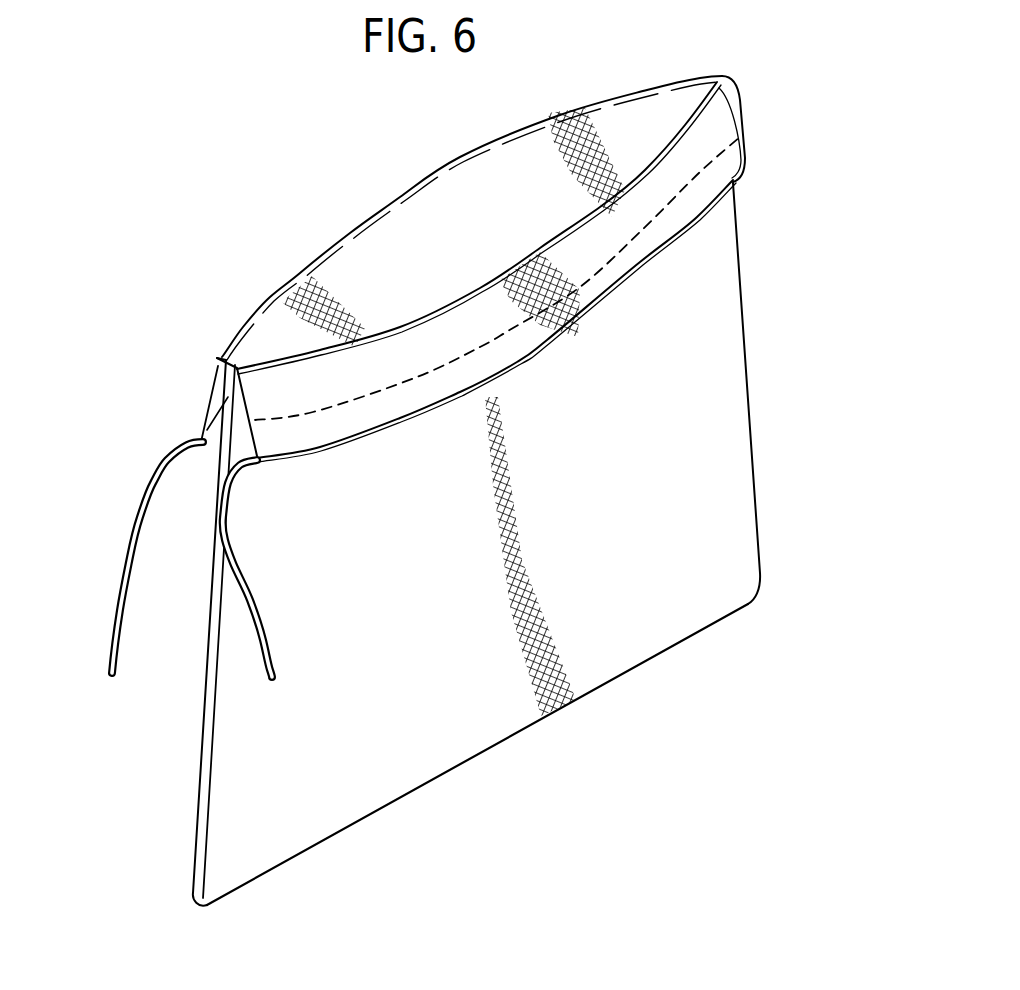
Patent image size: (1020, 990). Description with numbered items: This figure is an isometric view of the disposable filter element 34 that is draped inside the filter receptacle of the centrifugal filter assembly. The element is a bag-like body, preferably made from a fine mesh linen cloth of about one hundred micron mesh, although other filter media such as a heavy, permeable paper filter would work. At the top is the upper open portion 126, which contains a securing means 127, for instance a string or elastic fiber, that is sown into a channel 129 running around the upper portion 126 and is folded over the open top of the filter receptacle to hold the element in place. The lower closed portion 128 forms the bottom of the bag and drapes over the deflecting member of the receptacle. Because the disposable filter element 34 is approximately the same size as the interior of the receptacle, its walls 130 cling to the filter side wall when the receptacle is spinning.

The disposable filter element 34 is at (308, 235).
The upper open portion 126 is at (634, 96).
The securing means 127 is at (140, 527).
The lower closed portion 128 is at (428, 786).
The channel 129 is at (698, 197).
The walls 130 is at (695, 488).